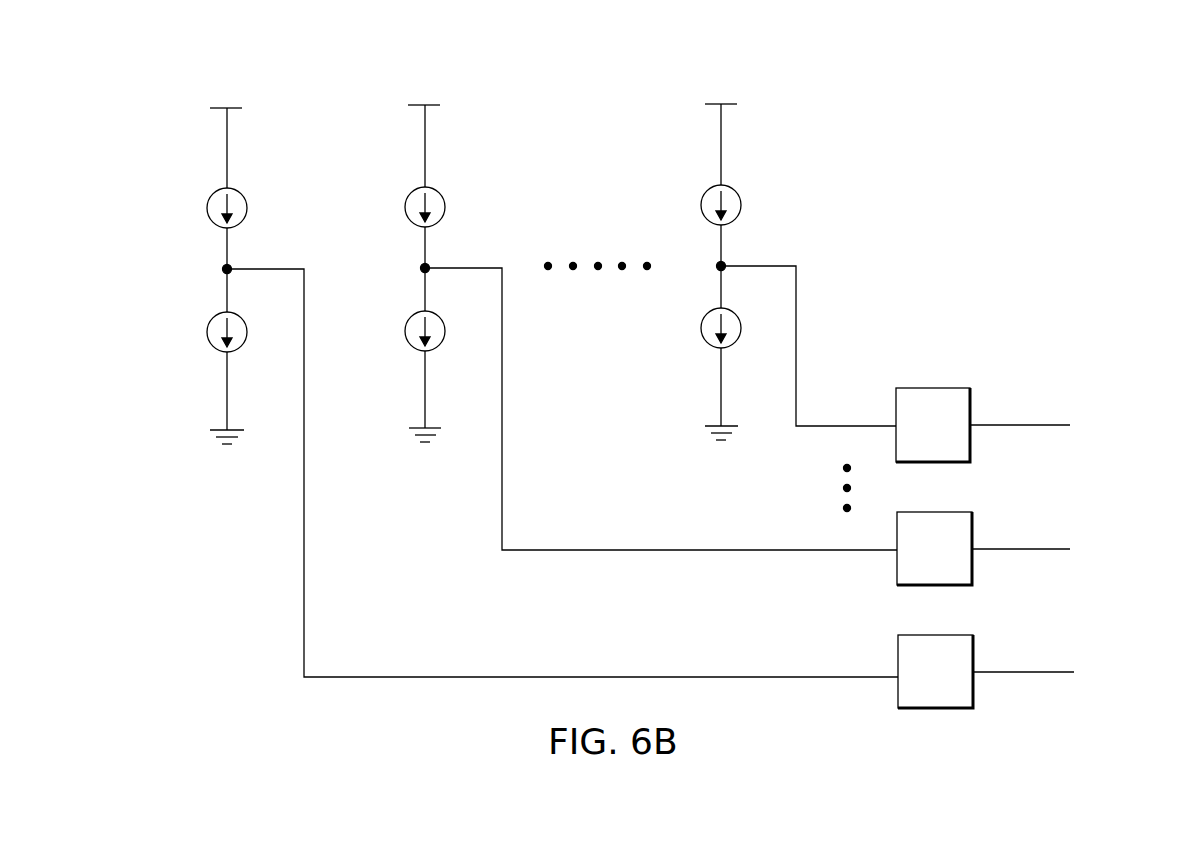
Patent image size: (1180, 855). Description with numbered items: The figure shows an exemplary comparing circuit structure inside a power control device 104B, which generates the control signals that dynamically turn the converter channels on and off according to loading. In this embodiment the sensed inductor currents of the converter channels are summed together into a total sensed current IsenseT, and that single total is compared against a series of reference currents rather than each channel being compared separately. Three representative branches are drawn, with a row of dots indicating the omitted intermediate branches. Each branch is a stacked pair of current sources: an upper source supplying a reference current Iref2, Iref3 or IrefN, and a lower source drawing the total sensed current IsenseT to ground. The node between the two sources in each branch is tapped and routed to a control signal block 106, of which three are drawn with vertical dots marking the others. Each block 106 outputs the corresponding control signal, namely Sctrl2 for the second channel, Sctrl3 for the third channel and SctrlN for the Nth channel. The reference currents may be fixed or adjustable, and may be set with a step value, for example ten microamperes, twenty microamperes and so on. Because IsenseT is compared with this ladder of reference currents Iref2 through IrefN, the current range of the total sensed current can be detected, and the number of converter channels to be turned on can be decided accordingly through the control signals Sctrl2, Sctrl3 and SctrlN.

The power control device 104B is at (180, 84).
The control signal generating circuit 106 is at (918, 388).
The reference current Iref2 is at (203, 208).
The reference current Iref3 is at (401, 207).
The reference current IrefN is at (696, 205).
The total sensed current IsenseT is at (442, 330).
The control signal SctrlN is at (1048, 428).
The control signal Sctrl3 is at (1049, 552).
The control signal Sctrl2 is at (1050, 675).